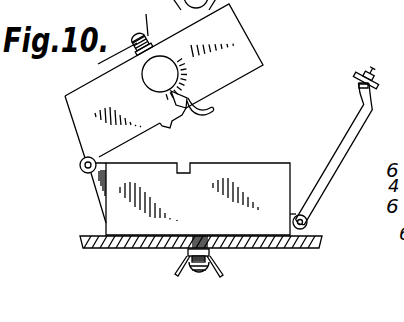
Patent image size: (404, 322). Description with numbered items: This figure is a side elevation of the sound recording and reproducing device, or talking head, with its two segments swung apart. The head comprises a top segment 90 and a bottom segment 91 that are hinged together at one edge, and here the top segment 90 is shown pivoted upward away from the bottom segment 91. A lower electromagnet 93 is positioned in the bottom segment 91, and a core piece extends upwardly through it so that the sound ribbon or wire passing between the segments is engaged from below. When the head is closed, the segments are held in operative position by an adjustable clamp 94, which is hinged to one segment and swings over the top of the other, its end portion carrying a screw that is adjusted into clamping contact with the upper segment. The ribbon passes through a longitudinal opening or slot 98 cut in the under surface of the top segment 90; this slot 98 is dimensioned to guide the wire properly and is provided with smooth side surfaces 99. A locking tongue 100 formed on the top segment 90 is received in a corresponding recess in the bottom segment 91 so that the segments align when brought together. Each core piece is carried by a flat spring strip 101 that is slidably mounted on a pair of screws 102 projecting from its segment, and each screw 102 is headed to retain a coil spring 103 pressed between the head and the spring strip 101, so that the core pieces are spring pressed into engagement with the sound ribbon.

The top segment 90 is at (230, 32).
The bottom segment 91 is at (266, 177).
The lower electromagnet 93 is at (367, 78).
The adjustable clamp 94 is at (350, 150).
The longitudinal opening or slot 98 is at (175, 102).
The smooth side surfaces 99 is at (218, 110).
The locking tongue 100 is at (170, 121).
The flat spring strip 101 is at (243, 260).
The screws 102 is at (135, 18).
The coil spring 103 is at (185, 273).